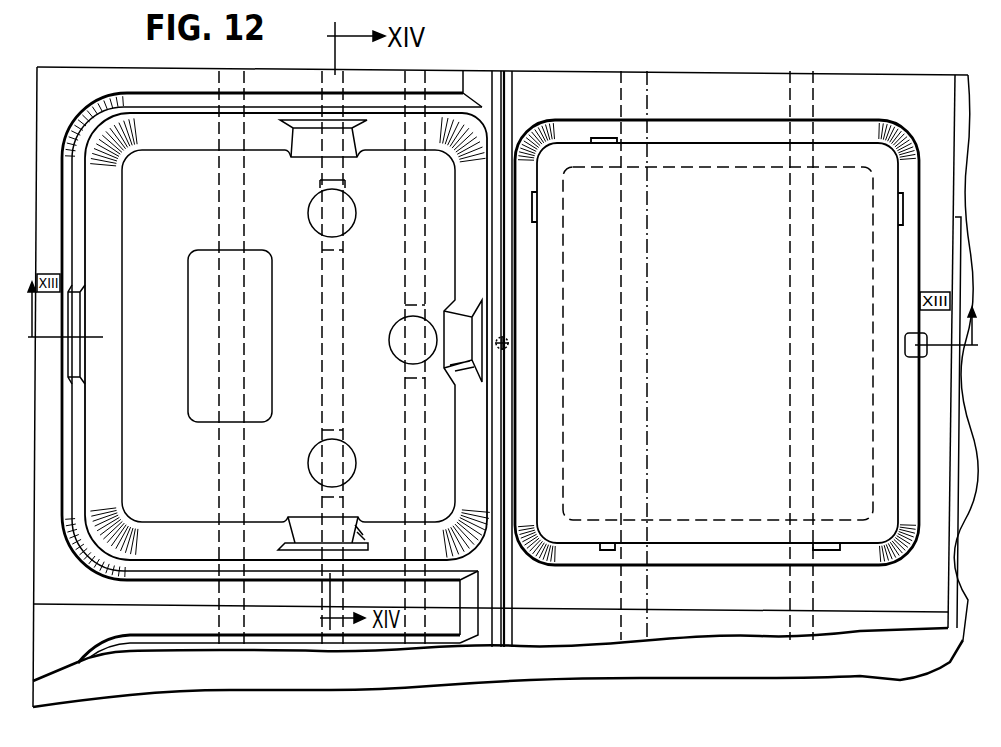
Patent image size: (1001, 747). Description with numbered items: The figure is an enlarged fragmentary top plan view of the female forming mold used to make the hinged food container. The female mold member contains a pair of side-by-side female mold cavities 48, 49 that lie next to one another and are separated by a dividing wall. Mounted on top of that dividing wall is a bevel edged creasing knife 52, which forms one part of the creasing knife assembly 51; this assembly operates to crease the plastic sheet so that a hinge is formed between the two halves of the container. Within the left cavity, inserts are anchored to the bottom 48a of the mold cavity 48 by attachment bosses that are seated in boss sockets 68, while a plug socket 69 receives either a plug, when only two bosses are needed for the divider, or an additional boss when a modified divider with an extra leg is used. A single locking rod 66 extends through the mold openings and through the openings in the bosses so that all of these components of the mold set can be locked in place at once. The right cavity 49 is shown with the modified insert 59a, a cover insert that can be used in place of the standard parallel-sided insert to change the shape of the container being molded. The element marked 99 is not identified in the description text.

The female mold cavity 48 is at (190, 746).
The bottom of the mold cavity 48a is at (205, 480).
The female mold cavity 49 is at (783, 746).
The modified insert 59a is at (740, 473).
The creasing knife assembly 51 is at (518, 579).
The bevel edged creasing knife 52 is at (498, 636).
The locking rod 66 is at (413, 645).
The boss socket 68 is at (357, 220).
The plug socket 69 is at (392, 328).
The panel opening 99 is at (194, 378).